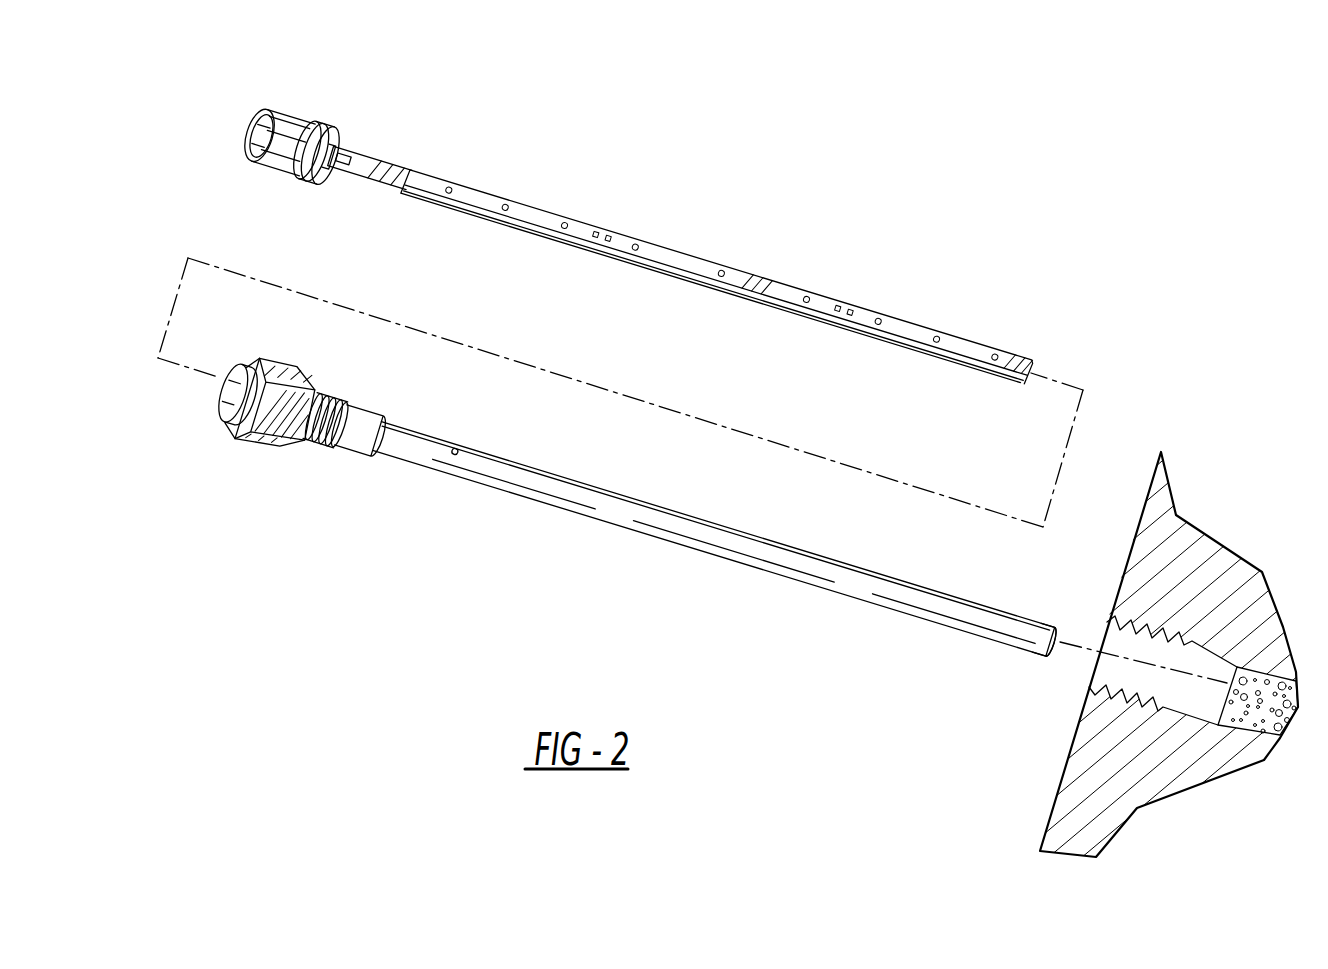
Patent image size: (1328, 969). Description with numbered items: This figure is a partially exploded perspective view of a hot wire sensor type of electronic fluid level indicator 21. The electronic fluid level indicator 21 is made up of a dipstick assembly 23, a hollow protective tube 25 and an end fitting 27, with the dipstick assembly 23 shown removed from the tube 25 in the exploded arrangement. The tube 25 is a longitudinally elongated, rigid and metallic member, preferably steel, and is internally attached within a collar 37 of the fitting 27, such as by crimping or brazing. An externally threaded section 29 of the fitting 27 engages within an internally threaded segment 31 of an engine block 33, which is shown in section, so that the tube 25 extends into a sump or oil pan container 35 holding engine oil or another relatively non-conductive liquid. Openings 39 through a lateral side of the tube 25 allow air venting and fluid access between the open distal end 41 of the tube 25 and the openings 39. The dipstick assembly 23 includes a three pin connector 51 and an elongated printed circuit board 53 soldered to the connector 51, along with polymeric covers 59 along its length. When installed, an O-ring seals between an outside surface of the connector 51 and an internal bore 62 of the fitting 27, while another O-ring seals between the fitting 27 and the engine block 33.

The electronic fluid level indicator 21 is at (893, 235).
The dipstick assembly 23 is at (208, 137).
The hollow protective tube 25 is at (735, 543).
The end fitting 27 is at (257, 430).
The externally threaded section 29 is at (313, 440).
The internally threaded segment 31 is at (1118, 620).
The engine block 33 is at (1195, 550).
The sump or oil pan container 35 is at (1276, 724).
The collar 37 is at (363, 437).
The openings 39 is at (455, 457).
The open distal end 41 is at (1050, 655).
The three pin connector 51 is at (273, 113).
The printed circuit board 53 is at (370, 163).
The polymeric covers 59 is at (664, 253).
The internal bore 62 is at (235, 397).